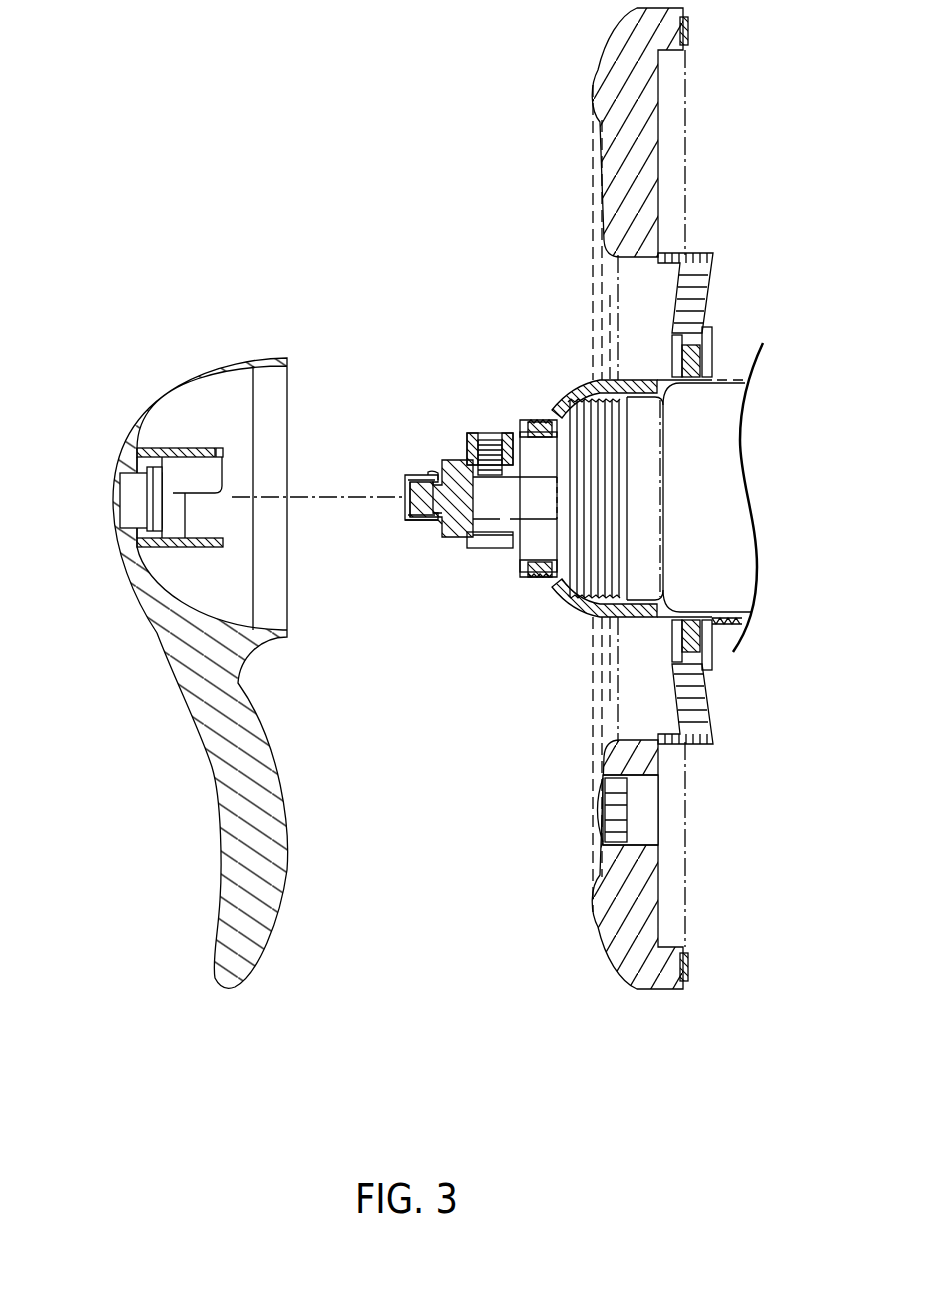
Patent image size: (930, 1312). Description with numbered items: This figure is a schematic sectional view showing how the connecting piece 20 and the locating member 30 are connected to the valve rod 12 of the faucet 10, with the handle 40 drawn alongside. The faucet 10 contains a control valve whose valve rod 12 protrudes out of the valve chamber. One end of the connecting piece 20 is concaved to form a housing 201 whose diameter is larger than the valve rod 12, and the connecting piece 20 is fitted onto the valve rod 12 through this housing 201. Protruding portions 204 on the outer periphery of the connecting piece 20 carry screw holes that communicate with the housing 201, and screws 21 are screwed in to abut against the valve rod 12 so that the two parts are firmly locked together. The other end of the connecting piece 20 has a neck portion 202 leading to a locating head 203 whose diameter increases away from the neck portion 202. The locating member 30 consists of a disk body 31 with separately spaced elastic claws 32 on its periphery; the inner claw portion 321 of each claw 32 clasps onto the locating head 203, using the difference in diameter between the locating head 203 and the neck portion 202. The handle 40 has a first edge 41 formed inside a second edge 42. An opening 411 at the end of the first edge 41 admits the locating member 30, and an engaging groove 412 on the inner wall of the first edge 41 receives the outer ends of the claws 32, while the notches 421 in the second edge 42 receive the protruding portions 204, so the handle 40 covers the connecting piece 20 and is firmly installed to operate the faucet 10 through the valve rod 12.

The faucet 10 is at (719, 310).
The valve rod 12 is at (455, 458).
The connecting piece 20 is at (516, 493).
The housing 201 is at (500, 532).
The neck portion 202 is at (434, 528).
The locating head 203 is at (401, 525).
The protruding portion 204 is at (513, 428).
The screw 21 is at (480, 434).
The locating member 30 is at (386, 486).
The disk body 31 is at (415, 510).
The claw 32 is at (380, 472).
The inner claw portion 321 is at (433, 471).
The handle 40 is at (158, 641).
The first edge 41 is at (133, 526).
The opening 411 is at (157, 488).
The engaging groove 412 is at (150, 464).
The second edge 42 is at (224, 448).
The notch 421 is at (212, 533).